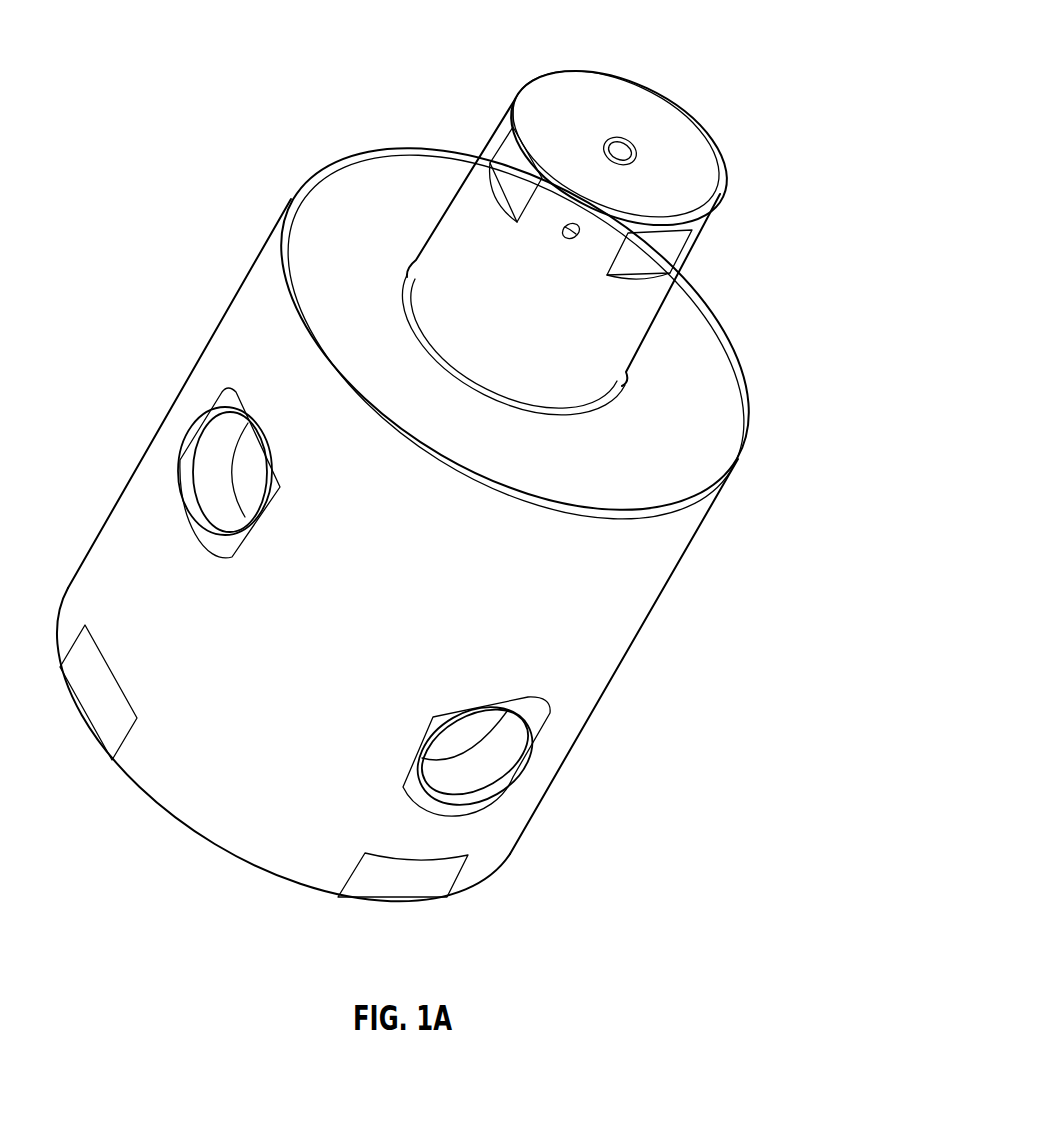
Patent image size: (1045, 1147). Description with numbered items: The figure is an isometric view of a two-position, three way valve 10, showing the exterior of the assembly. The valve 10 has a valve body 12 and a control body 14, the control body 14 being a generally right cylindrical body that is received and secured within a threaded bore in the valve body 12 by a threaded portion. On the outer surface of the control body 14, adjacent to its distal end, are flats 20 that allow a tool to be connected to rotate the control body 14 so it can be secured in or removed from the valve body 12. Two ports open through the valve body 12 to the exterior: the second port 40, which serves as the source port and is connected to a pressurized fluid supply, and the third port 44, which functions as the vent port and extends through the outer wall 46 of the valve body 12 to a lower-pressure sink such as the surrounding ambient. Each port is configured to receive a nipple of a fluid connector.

The two-position three way valve 10 is at (754, 52).
The valve body 12 is at (677, 568).
The control body 14 is at (722, 207).
The flats 20 is at (516, 157).
The second port 40 is at (505, 748).
The third port 44 is at (210, 477).
The outer wall 46 is at (637, 640).